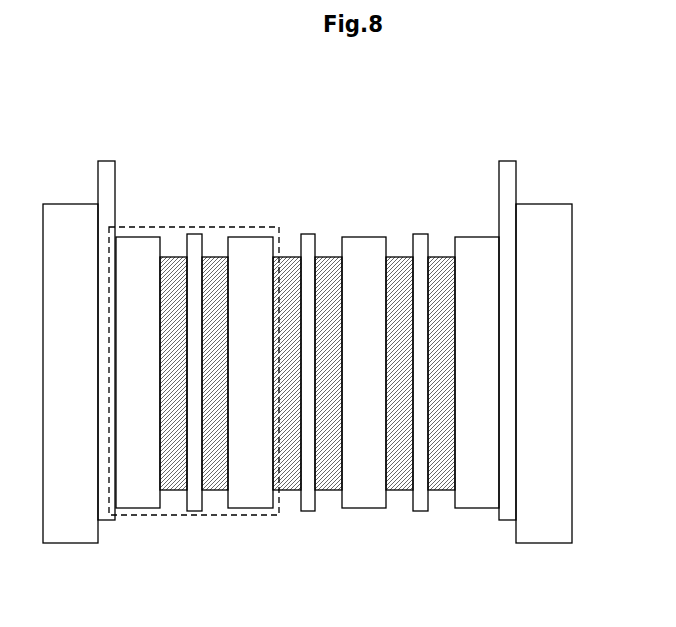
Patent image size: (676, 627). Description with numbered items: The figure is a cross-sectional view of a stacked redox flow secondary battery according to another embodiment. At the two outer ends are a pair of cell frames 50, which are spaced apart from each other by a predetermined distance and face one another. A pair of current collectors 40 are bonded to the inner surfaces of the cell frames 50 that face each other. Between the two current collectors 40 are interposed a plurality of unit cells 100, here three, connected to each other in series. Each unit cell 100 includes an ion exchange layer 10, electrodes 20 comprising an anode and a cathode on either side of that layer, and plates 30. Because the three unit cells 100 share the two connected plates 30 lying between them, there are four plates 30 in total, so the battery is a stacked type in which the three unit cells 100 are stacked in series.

The unit cell 100 is at (219, 227).
The ion exchange layer 10 is at (192, 234).
The electrodes 20 is at (170, 490).
The plates 30 is at (136, 237).
The current collectors 40 is at (112, 161).
The cell frames 50 is at (72, 543).